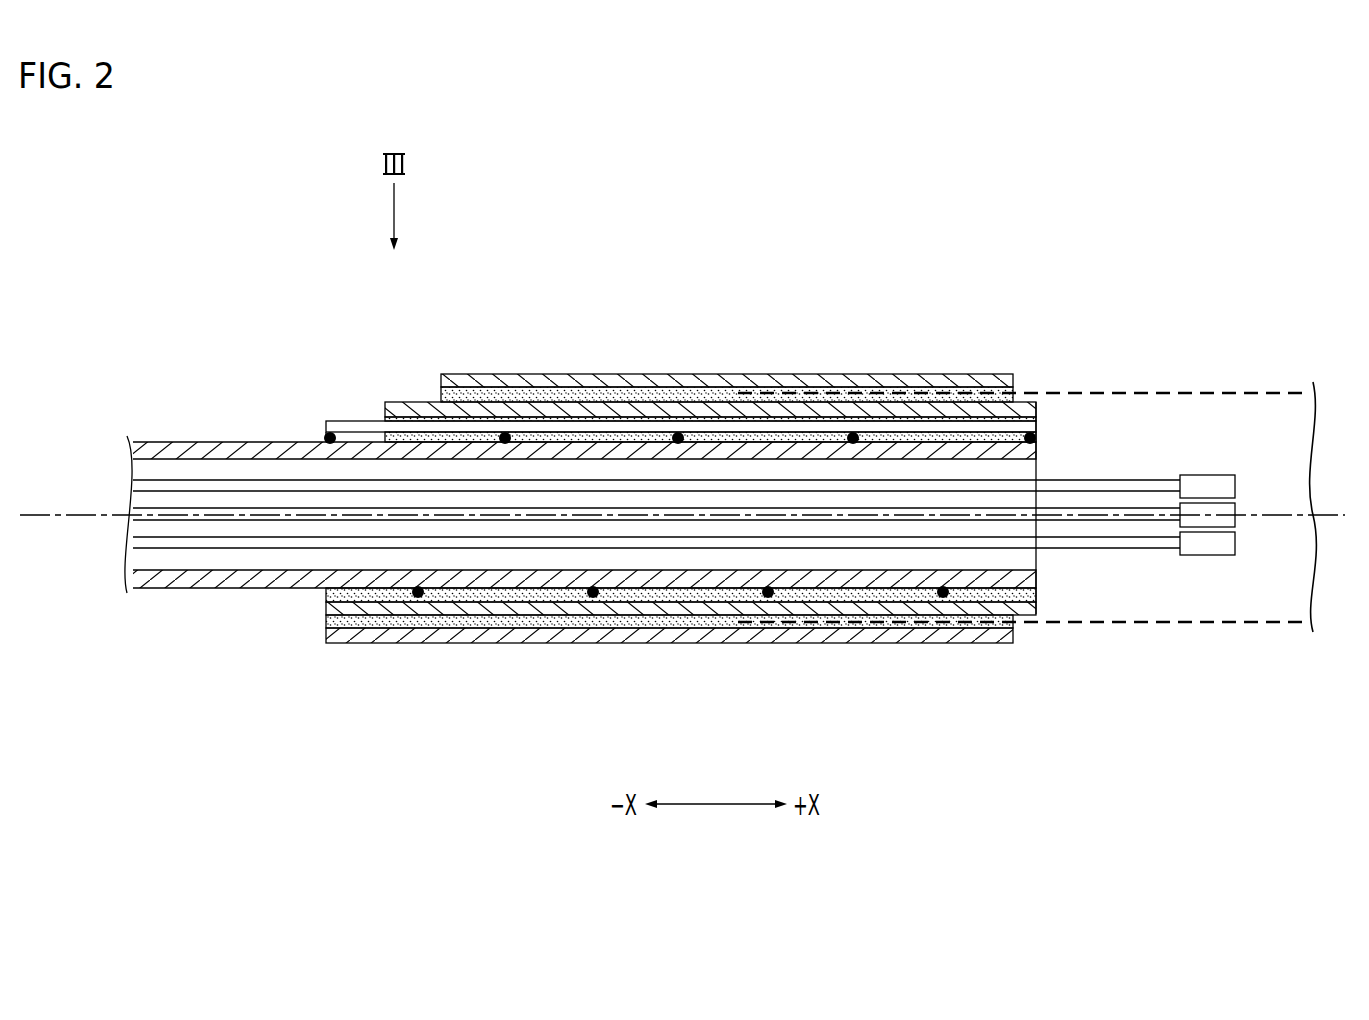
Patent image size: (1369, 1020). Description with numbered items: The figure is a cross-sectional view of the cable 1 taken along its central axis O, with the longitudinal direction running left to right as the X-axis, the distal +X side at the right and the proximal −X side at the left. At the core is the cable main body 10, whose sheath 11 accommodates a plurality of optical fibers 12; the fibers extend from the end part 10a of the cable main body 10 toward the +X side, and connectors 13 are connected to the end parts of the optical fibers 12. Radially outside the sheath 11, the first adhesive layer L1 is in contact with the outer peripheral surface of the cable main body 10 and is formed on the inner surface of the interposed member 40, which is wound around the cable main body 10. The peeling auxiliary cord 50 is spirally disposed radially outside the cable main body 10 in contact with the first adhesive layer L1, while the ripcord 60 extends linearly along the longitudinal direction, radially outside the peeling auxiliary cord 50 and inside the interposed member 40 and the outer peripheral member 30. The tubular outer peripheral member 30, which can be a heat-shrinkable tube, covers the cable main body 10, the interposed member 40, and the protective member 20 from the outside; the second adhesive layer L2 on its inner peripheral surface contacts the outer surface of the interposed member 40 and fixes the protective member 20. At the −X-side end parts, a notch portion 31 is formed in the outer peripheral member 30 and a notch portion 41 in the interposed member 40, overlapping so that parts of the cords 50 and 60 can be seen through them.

The cable 1 is at (272, 284).
The cable main body 10 is at (186, 438).
The end part of the cable main body 10a is at (1046, 450).
The sheath 11 is at (231, 442).
The optical fibers 12 is at (1115, 480).
The connectors 13 is at (1215, 475).
The protective member 20 is at (1209, 386).
The outer peripheral member 30 is at (623, 364).
The notch portion 31 is at (441, 375).
The interposed member 40 is at (695, 392).
The notch portion 41 is at (385, 417).
The peeling auxiliary cord 50 is at (590, 612).
The ripcord 60 is at (795, 415).
The first adhesive layer L1 is at (448, 593).
The second adhesive layer L2 is at (513, 622).
The central axis O is at (47, 515).